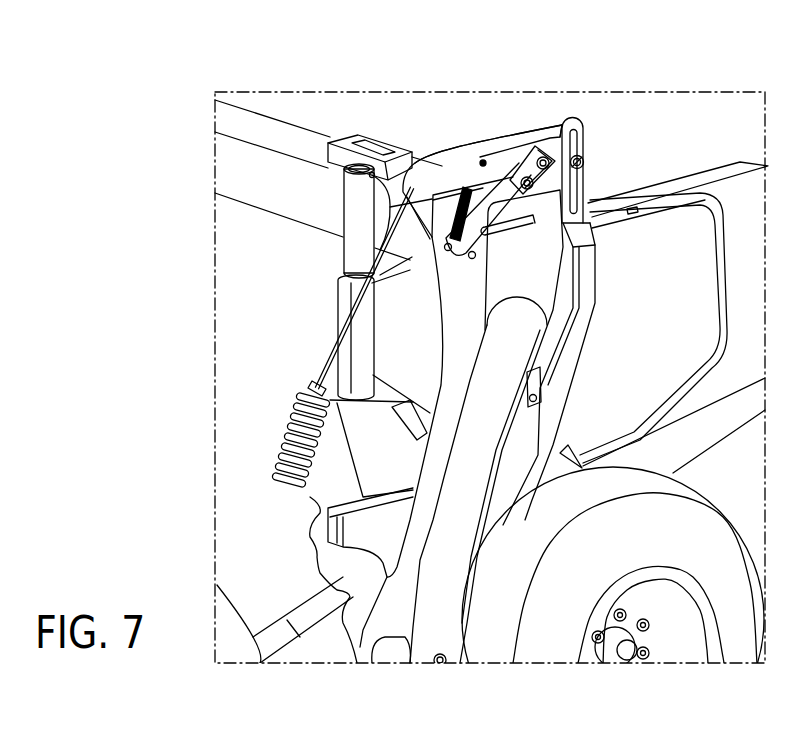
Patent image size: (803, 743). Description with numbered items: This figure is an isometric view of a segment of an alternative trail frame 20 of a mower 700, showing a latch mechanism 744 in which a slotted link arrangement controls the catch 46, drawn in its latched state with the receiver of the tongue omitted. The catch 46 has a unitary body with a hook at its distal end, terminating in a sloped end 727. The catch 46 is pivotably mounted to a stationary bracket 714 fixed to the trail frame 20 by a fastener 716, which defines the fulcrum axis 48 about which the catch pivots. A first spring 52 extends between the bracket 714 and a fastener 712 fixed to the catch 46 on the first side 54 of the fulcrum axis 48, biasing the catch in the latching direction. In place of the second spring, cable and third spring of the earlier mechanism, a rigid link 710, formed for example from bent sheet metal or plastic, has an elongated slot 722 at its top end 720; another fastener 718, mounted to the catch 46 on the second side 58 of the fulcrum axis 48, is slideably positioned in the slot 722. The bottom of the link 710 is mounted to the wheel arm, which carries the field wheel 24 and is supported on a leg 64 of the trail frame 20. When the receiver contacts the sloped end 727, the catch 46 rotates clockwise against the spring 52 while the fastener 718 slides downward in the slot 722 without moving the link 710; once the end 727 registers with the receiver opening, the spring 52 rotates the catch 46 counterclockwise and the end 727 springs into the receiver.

The trail frame 20 is at (240, 170).
The field wheel 24 is at (495, 637).
The catch 46 is at (437, 172).
The fulcrum axis 48 is at (517, 153).
The first spring 52 is at (450, 252).
The first side 54 is at (462, 91).
The second side 58 is at (638, 138).
The leg 64 is at (453, 440).
The mower 700 is at (265, 368).
The link 710 is at (585, 288).
The fastener 712 is at (483, 163).
The bracket 714 is at (477, 255).
The fastener 716 is at (534, 115).
The fastener 718 is at (581, 158).
The top end 720 is at (573, 115).
The slot 722 is at (583, 185).
The sloped end 727 is at (410, 237).
The latch mechanism 744 is at (579, 49).